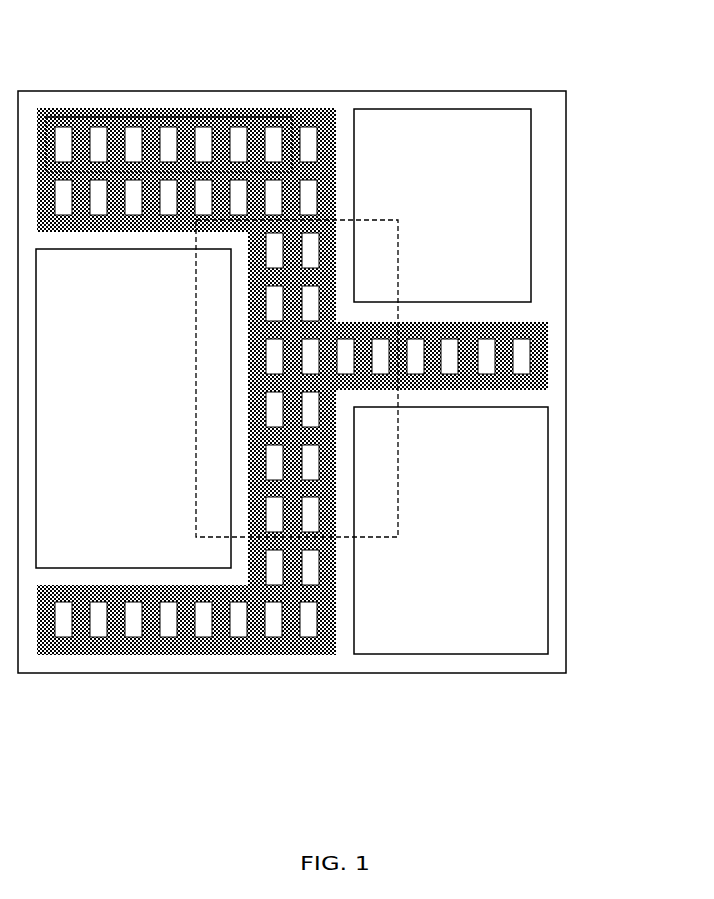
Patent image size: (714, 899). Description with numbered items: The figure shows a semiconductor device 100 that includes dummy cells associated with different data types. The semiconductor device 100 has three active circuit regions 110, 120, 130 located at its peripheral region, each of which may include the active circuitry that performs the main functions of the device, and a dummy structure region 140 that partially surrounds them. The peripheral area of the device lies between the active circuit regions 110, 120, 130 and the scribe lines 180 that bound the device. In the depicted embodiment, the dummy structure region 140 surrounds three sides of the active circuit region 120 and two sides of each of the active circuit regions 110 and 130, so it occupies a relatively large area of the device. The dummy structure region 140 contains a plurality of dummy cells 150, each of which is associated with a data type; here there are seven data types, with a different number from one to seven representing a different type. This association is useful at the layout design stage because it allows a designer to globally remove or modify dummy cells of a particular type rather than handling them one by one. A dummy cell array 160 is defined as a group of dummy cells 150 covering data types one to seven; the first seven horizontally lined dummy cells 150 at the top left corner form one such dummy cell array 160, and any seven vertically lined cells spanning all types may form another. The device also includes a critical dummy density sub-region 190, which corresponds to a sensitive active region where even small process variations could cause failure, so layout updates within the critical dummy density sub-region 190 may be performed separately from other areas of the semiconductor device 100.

The semiconductor device 100 is at (613, 52).
The active circuit region 110 is at (429, 228).
The active circuit region 120 is at (129, 435).
The active circuit region 130 is at (438, 543).
The dummy structure region 140 is at (548, 323).
The dummy cell 150 is at (98, 637).
The dummy cell array 160 is at (223, 122).
The scribe lines 180 is at (566, 204).
The critical dummy density sub-region 190 is at (334, 242).